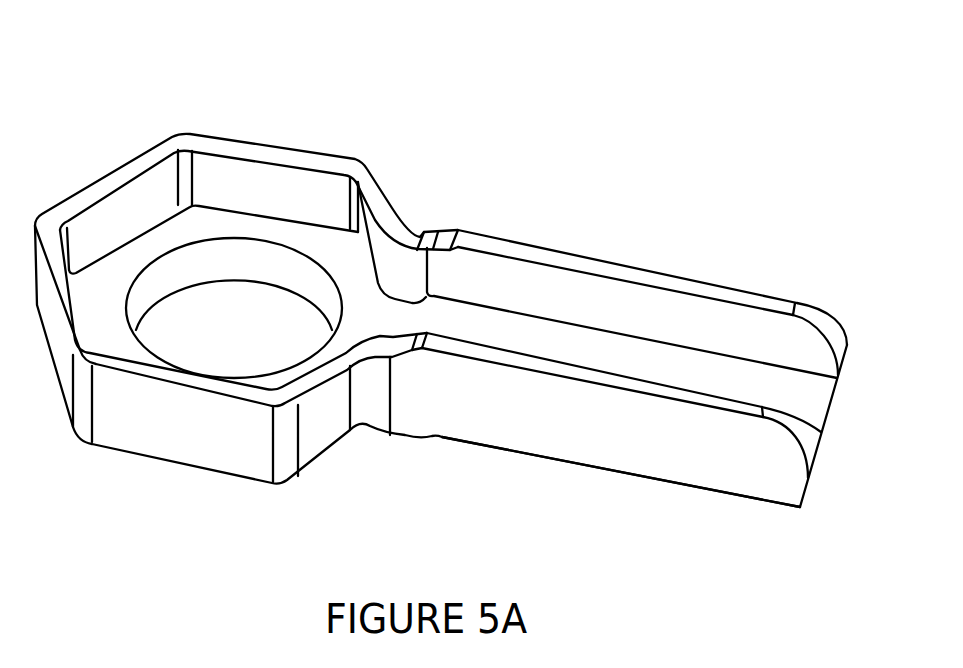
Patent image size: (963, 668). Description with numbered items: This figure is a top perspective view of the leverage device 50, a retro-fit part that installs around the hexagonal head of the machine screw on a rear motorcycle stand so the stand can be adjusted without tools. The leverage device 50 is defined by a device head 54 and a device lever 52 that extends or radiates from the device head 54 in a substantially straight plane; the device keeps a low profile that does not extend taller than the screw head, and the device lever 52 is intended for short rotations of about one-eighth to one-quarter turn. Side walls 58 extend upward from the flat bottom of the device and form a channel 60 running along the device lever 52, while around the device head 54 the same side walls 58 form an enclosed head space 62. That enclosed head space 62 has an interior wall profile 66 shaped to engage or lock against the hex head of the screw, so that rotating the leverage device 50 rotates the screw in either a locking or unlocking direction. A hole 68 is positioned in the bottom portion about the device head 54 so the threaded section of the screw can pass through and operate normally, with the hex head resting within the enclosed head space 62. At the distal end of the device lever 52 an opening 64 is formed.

The leverage device 50 is at (578, 246).
The device lever 52 is at (800, 400).
The device head 54 is at (335, 260).
The side walls 58 is at (712, 312).
The channel 60 is at (783, 350).
The enclosed head space 62 is at (210, 200).
The opening 64 is at (820, 433).
The interior wall profile 66 is at (100, 217).
The hole 68 is at (253, 267).